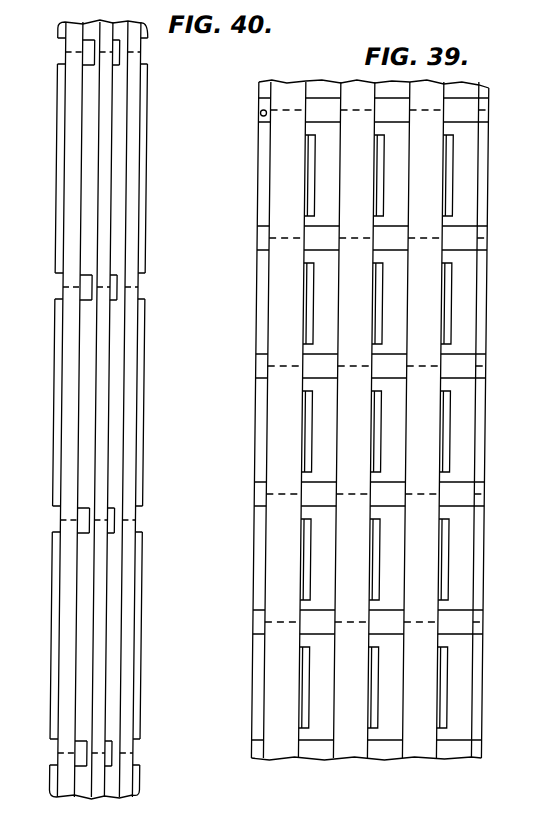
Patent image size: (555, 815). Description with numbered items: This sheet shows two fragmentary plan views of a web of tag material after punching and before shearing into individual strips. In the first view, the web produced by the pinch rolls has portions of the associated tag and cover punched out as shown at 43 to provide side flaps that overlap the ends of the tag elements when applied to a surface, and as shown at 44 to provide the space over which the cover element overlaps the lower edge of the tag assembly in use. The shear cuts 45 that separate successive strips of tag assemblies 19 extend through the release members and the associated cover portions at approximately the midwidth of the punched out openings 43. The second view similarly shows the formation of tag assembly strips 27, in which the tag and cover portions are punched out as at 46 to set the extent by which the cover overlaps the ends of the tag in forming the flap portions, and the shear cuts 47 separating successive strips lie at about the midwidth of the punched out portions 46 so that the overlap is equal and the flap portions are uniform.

In FIG. 39, the tag assemblies 19 is at (506, 180).
In FIG. 40, the tag assembly strips 27 is at (40, 415).
In FIG. 39, the punched out openings 43 is at (259, 114).
In FIG. 39, the punched out portion 44 is at (304, 127).
In FIG. 39, the shear cuts 45 is at (350, 106).
In FIG. 40, the punched out portions 46 is at (86, 274).
In FIG. 40, the shear cuts 47 is at (70, 290).